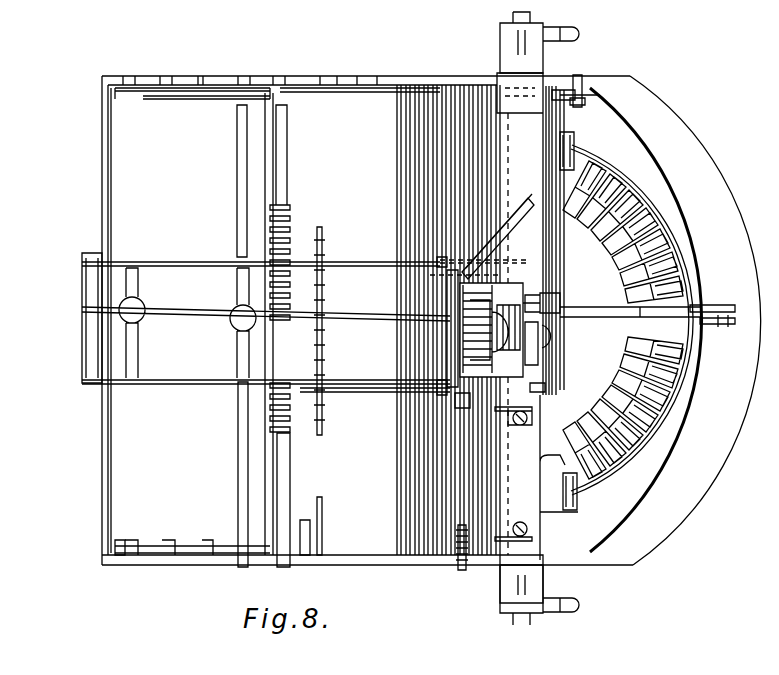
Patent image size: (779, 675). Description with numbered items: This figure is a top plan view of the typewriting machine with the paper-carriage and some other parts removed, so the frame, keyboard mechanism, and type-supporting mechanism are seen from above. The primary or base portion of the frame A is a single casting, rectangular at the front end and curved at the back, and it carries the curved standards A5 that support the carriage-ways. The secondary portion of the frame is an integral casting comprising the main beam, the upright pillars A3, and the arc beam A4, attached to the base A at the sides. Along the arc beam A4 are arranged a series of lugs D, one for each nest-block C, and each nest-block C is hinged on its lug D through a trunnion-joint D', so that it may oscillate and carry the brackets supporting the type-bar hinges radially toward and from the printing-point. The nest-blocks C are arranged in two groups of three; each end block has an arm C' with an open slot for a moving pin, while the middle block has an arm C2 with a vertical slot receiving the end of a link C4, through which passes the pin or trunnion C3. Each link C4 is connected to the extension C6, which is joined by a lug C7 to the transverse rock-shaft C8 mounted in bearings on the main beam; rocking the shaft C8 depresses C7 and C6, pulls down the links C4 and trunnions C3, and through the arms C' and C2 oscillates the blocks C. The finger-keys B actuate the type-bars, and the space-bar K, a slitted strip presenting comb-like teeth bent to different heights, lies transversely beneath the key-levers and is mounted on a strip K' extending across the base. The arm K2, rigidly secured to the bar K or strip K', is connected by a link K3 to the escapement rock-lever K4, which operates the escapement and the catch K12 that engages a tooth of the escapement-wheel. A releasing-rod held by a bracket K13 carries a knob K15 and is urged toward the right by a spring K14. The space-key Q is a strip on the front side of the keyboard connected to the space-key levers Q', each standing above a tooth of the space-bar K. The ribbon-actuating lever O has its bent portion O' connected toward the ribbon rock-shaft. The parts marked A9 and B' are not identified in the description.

The frame A is at (431, 338).
The upright pillars A3 is at (572, 135).
The arc beam A4 is at (581, 166).
The curved standards A5 is at (539, 314).
The frame bar A9 is at (440, 262).
The finger-keys B is at (266, 323).
The carriage roller B' is at (231, 336).
The nest-block C is at (647, 320).
The nest-block arm C' is at (594, 323).
The middle nest-block arm C2 is at (606, 319).
The pin or trunnion C3 is at (540, 390).
The link C4 is at (552, 375).
The extension C6 is at (570, 330).
The lug C7 is at (558, 262).
The rock-shaft C8 is at (596, 92).
The lug D is at (669, 319).
The trunnion-joint D' is at (682, 316).
The space-bar K is at (220, 397).
The strip K' is at (292, 511).
The arm K2 is at (363, 388).
The link K3 is at (287, 207).
The escapement rock-lever K4 is at (437, 365).
The catch K12 is at (437, 262).
The bracket K13 is at (486, 560).
The spring K14 is at (460, 557).
The knob K15 is at (463, 572).
The ribbon-actuating lever O is at (439, 191).
The bent portion O' is at (482, 236).
The space-key Q is at (80, 318).
The space-key lever Q' is at (266, 317).